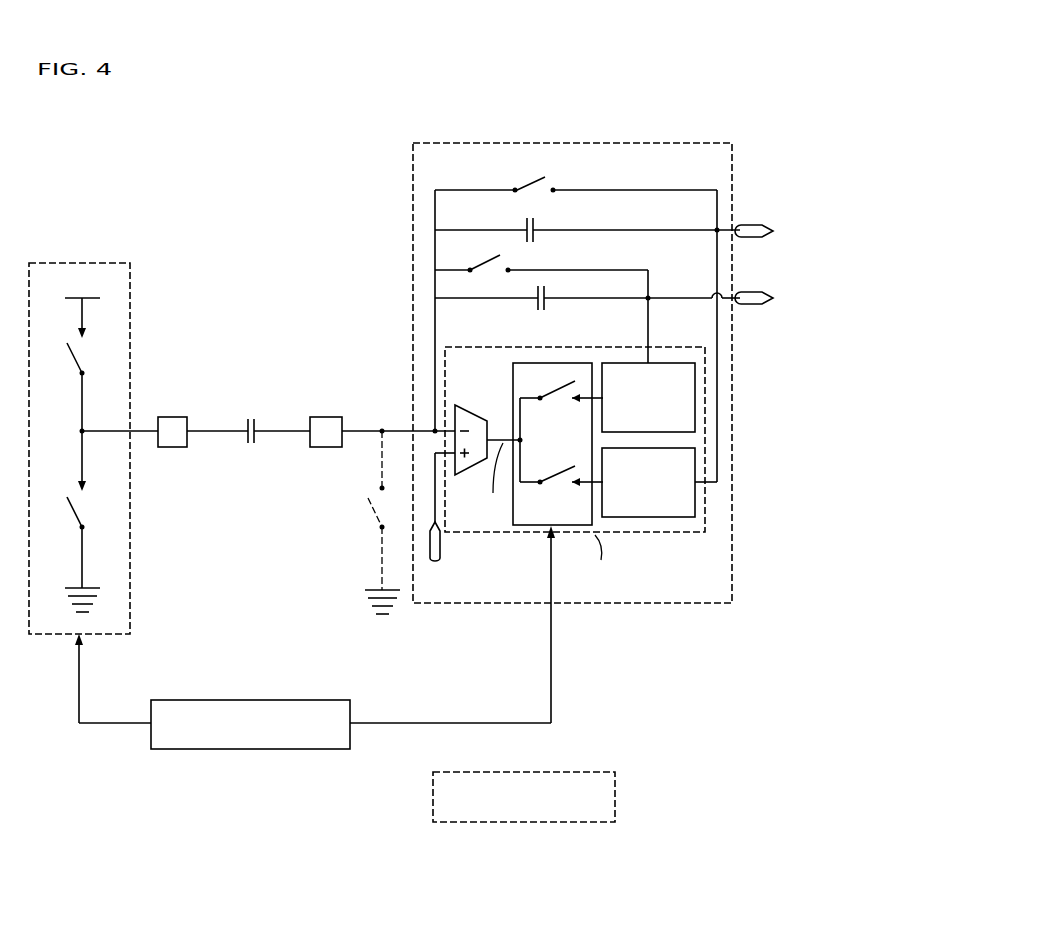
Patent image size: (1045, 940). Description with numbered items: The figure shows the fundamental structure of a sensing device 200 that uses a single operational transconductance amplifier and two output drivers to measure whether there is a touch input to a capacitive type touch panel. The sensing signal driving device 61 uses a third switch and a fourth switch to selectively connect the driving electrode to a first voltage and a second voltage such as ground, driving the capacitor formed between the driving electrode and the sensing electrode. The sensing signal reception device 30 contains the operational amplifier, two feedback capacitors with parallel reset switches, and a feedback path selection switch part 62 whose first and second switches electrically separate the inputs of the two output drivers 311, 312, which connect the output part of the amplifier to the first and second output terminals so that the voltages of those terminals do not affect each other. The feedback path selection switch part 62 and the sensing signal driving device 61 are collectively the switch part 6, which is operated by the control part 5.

The sensing device 200 is at (243, 205).
The sensing signal reception device 30 is at (542, 143).
The control part 5 is at (250, 700).
The switch part 6 is at (615, 797).
The sensing signal driving device 61 is at (79, 262).
The feedback path selection switch part 62 is at (510, 393).
The output driver 311 is at (668, 362).
The output driver 312 is at (645, 522).